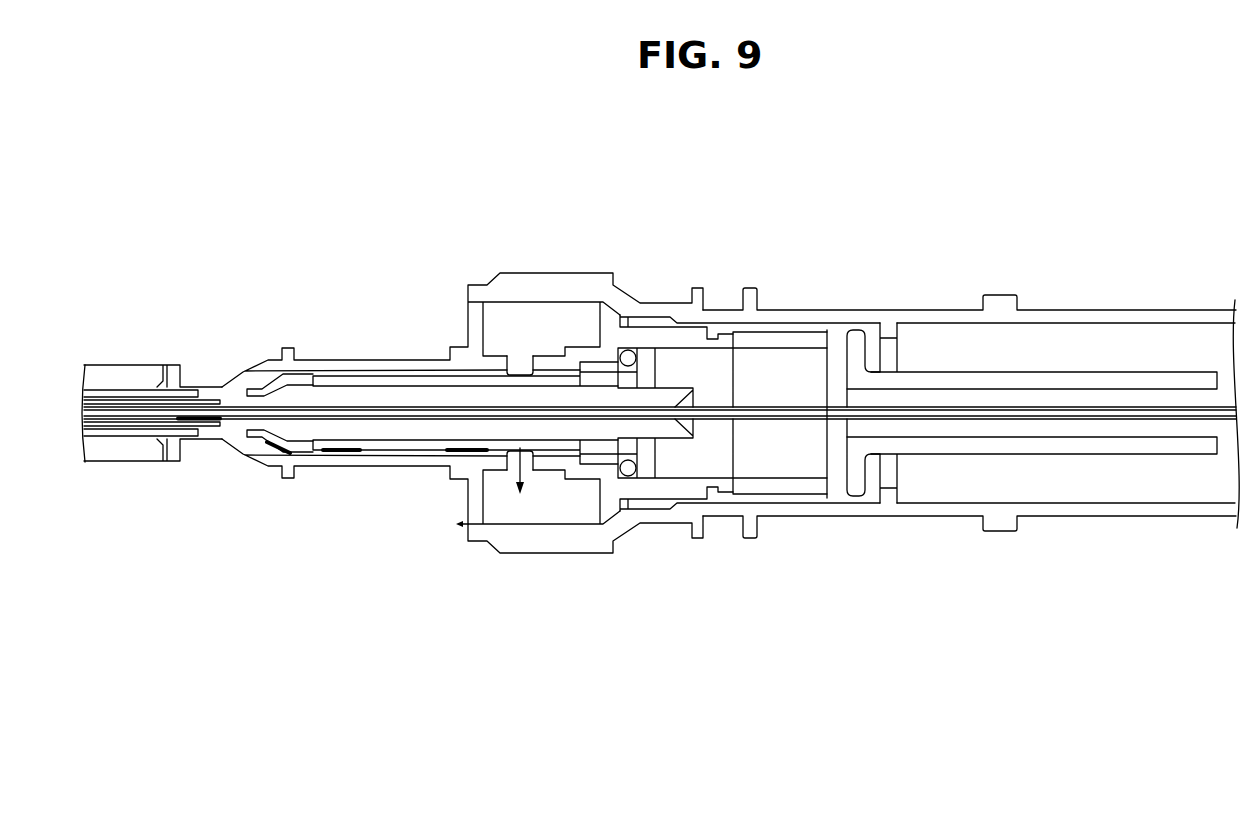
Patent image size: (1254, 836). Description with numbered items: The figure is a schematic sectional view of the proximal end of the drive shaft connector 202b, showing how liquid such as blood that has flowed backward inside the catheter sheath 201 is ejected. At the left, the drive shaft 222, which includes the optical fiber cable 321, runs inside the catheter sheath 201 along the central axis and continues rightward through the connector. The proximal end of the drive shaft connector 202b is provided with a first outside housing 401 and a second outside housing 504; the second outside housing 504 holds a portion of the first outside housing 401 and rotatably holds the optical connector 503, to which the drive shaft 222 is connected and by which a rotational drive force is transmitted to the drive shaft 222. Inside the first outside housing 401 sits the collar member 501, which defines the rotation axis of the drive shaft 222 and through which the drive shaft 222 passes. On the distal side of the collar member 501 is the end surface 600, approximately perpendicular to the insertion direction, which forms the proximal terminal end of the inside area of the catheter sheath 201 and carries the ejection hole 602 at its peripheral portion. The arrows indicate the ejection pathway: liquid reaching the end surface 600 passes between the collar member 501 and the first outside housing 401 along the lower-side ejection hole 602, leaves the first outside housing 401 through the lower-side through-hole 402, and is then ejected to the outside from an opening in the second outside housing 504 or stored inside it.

The catheter sheath 201 is at (122, 436).
The drive shaft 222 is at (107, 404).
The optical fiber cable 321 is at (152, 412).
The end surface 600 is at (237, 387).
The ejection hole 602 is at (246, 431).
The first outside housing 401 is at (397, 362).
The through-hole 402 is at (520, 368).
The collar member 501 is at (330, 383).
The drive shaft connector 202b is at (631, 220).
The second outside housing 504 is at (797, 312).
The optical connector 503 is at (1063, 352).